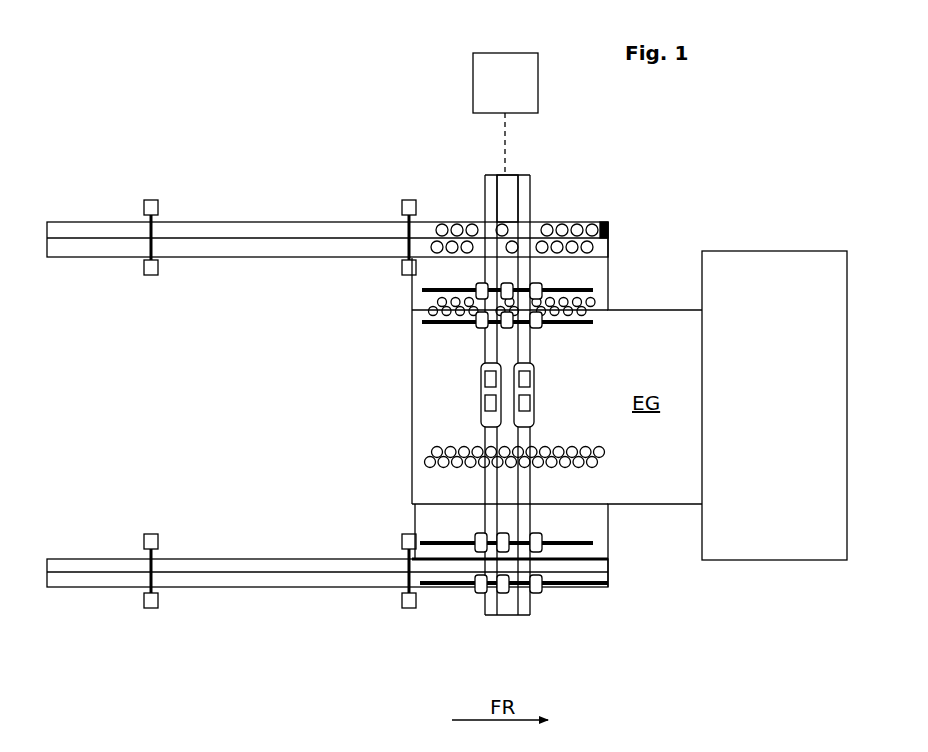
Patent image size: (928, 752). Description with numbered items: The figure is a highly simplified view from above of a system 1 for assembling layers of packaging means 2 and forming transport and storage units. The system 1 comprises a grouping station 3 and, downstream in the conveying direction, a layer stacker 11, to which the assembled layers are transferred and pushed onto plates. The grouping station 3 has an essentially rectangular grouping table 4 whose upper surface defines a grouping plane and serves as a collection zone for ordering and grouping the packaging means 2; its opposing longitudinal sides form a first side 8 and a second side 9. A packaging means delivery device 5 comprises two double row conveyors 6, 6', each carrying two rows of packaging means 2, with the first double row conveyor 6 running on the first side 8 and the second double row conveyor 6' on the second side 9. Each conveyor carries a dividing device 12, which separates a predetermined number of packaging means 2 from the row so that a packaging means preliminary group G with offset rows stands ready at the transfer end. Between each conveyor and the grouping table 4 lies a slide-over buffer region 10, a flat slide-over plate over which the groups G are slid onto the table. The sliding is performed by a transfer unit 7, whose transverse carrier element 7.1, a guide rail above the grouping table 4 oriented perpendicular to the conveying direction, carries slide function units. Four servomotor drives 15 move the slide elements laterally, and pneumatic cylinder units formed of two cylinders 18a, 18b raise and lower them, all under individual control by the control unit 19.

The system 1 is at (292, 155).
The packaging means 2 is at (580, 226).
The grouping station 3 is at (362, 610).
The grouping table 4 is at (424, 412).
The packaging means delivery device 5 is at (252, 278).
The first double row conveyor 6 is at (327, 281).
The second double row conveyor 6' is at (327, 532).
The transfer unit 7 is at (476, 347).
The transverse carrier element 7.1 is at (522, 187).
The first side 8 is at (672, 282).
The second side 9 is at (649, 529).
The slide-over buffer region 10 is at (440, 275).
The layer stacker 11 is at (830, 311).
The dividing device 12 is at (149, 277).
The motor drive 15 is at (485, 379).
The cylinder 18a is at (536, 588).
The cylinder 18b is at (480, 543).
The control unit 19 is at (540, 82).
The packaging means preliminary group G is at (460, 228).